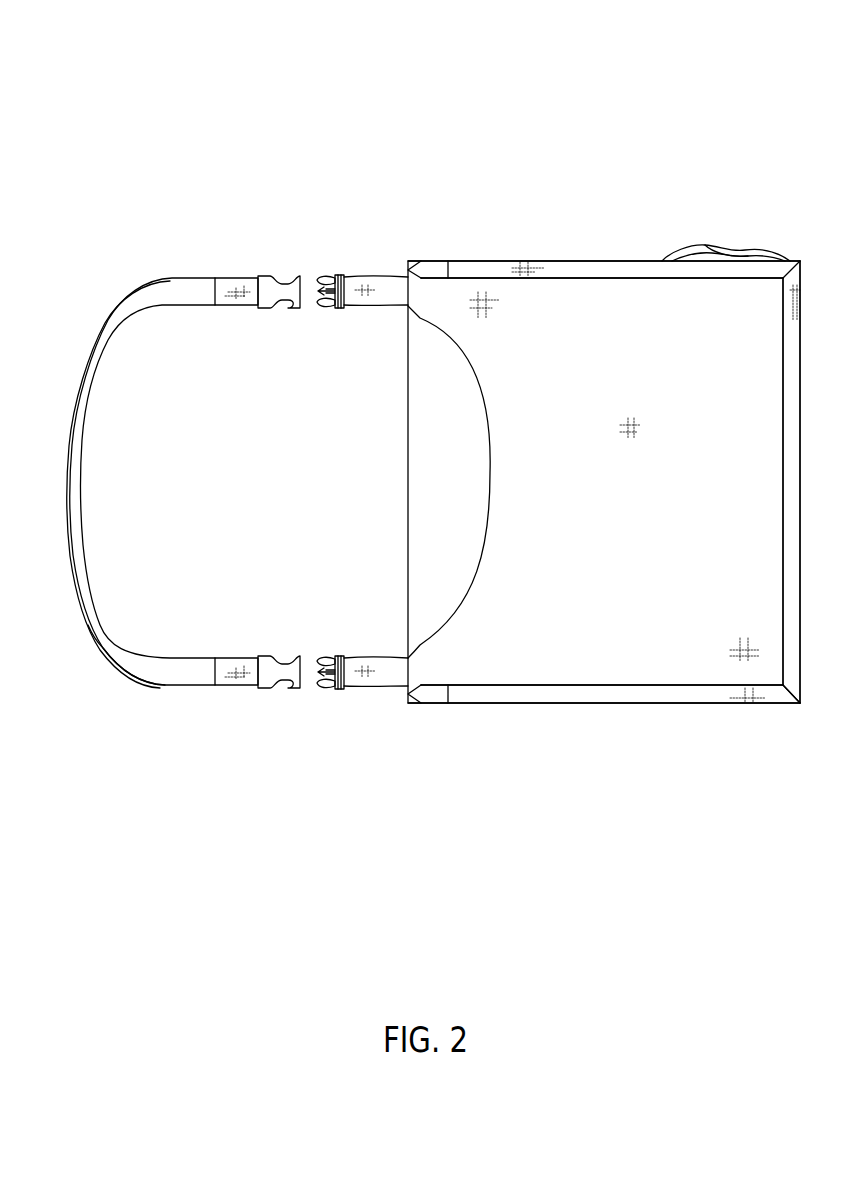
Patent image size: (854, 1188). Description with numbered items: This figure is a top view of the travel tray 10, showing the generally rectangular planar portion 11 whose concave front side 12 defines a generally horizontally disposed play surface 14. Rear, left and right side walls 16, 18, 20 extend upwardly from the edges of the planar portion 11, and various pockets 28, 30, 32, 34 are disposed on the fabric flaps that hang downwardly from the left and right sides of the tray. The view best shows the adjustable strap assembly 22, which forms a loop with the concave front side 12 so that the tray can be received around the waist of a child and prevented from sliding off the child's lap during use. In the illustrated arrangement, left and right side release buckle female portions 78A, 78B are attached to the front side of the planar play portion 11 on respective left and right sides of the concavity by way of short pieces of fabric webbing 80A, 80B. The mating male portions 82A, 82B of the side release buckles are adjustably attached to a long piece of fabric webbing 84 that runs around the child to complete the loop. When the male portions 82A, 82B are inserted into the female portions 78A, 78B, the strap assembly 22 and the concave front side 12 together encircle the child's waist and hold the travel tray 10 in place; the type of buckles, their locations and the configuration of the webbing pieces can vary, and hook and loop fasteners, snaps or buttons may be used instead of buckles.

The travel tray 10 is at (687, 116).
The planar portion 11 is at (622, 348).
The concave front side 12 is at (488, 468).
The play surface 14 is at (692, 608).
The rear side wall 16 is at (793, 460).
The left side wall 18 is at (580, 270).
The right side wall 20 is at (593, 694).
The adjustable strap assembly 22 is at (114, 312).
The pocket 28 is at (486, 262).
The pocket 30 is at (751, 251).
The pocket 32 is at (480, 705).
The pocket 34 is at (688, 705).
The left side release buckle female portion 78A is at (282, 288).
The right side release buckle female portion 78B is at (267, 677).
The short piece of fabric webbing 80A is at (373, 292).
The short piece of fabric webbing 80B is at (374, 668).
The side release buckle male portion 82A is at (322, 280).
The side release buckle male portion 82B is at (326, 684).
The long piece of fabric webbing 84 is at (128, 658).